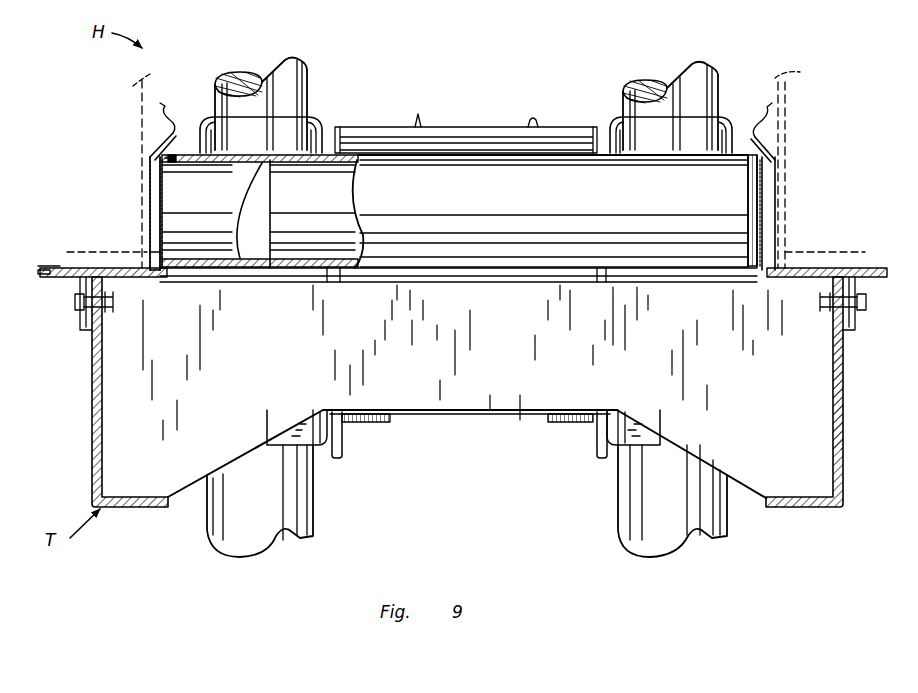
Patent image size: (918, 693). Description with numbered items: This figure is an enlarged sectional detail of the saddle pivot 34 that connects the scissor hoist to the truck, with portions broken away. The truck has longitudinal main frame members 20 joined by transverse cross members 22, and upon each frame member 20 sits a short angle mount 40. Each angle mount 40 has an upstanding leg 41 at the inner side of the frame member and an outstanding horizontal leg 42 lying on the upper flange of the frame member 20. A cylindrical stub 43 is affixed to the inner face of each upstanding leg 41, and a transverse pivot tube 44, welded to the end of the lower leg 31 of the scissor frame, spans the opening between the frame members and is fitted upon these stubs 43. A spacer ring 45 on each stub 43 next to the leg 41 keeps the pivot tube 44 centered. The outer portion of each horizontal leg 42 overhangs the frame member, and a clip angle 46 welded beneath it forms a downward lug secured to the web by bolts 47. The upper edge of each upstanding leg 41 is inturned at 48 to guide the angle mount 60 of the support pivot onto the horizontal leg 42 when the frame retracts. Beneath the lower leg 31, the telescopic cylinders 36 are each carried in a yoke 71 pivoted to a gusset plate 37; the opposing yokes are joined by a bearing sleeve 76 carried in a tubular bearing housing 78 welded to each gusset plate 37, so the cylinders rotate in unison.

The longitudinal main frame member 20 is at (92, 437).
The transverse cross member 22 is at (800, 364).
The lower leg 31 is at (490, 140).
The saddle pivot 34 is at (512, 145).
The telescopic compound cylinder 36 is at (283, 80).
The gusset plate 37 is at (340, 440).
The angle mount 40 is at (150, 252).
The upstanding leg 41 is at (157, 185).
The horizontal leg 42 is at (63, 262).
The cylindrical stub 43 is at (218, 233).
The transverse pivot tube 44 is at (447, 233).
The spacer ring 45 is at (170, 163).
The clip angle 46 is at (77, 279).
The bolt 47 is at (78, 306).
The inturned upper edge 48 is at (462, 128).
The angle mount 60 is at (150, 203).
The yoke 71 is at (298, 440).
The bearing sleeve 76 is at (480, 418).
The tubular bearing housing 78 is at (572, 420).